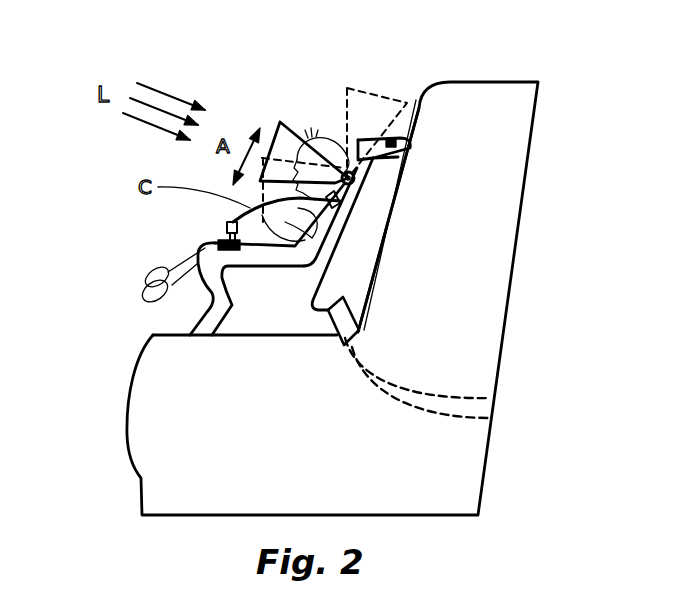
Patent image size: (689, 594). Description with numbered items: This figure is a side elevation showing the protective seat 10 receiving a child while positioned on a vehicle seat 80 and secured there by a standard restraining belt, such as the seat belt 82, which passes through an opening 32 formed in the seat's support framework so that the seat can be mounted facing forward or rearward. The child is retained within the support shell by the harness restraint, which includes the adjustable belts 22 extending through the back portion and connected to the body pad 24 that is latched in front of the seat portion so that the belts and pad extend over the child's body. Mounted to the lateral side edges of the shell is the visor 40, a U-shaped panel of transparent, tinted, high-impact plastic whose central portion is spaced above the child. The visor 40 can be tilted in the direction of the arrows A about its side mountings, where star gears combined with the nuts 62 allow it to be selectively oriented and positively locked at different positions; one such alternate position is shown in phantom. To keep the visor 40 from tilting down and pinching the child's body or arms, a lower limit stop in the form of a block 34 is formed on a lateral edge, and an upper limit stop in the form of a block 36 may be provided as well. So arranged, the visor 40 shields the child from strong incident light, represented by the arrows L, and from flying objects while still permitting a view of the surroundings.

The protective seat 10 is at (265, 328).
The belts 22 is at (265, 206).
The body pad 24 is at (233, 225).
The opening 32 is at (357, 250).
The block 34 is at (342, 200).
The block 36 is at (416, 100).
The visor 40 is at (278, 121).
The nuts 62 is at (350, 170).
The vehicle seat 80 is at (320, 446).
The seat belt 82 is at (350, 326).